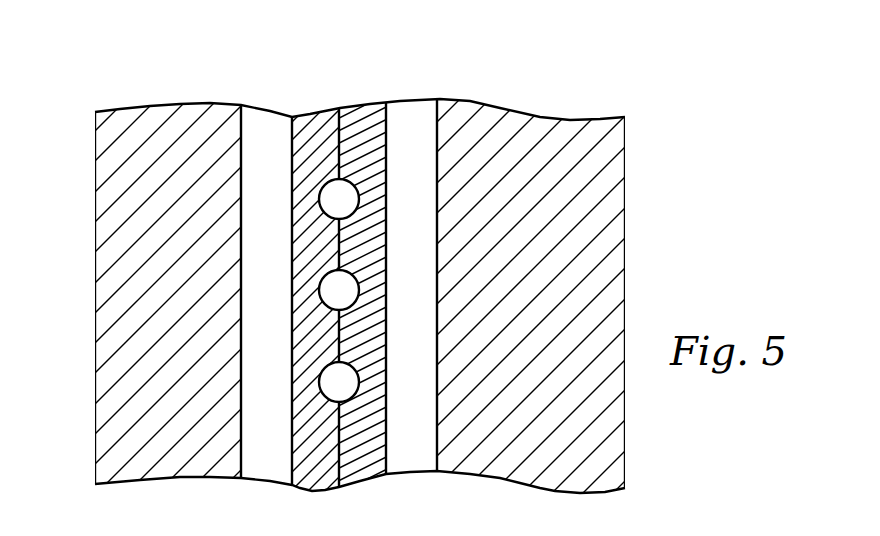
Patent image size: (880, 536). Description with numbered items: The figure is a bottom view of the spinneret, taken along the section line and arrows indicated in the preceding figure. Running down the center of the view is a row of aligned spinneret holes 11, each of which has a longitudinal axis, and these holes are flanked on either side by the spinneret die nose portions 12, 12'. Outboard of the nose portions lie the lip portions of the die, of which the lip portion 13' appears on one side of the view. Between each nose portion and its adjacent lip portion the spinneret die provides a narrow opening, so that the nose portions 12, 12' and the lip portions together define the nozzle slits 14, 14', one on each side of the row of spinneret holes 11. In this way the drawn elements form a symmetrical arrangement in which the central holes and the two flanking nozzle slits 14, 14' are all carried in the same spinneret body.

The spinneret holes 11 is at (341, 290).
The spinneret die nose portion 12 is at (378, 260).
The spinneret die nose portion 12' is at (417, 268).
The lip portion 13' is at (370, 268).
The nozzle slit 14 is at (448, 263).
The nozzle slit 14' is at (244, 272).